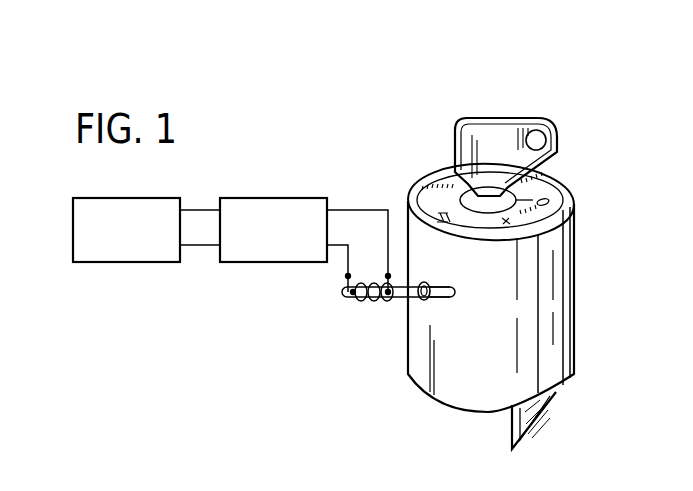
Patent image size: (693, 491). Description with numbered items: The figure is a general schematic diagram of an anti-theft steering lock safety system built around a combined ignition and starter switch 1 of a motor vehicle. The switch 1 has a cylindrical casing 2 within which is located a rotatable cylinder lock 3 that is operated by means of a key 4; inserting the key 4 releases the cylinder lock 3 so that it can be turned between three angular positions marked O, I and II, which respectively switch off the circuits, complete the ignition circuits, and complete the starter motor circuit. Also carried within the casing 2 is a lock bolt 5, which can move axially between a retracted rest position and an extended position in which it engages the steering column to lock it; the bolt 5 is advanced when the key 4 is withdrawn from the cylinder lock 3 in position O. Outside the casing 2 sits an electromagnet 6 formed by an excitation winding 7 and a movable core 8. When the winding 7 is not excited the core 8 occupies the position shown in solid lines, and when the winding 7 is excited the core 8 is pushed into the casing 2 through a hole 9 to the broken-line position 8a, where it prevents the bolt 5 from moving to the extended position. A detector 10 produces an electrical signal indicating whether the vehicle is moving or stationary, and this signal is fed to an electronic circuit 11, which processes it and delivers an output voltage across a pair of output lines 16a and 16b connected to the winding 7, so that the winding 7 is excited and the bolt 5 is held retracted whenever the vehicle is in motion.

The combined ignition and starter switch 1 is at (533, 283).
The casing 2 is at (420, 377).
The rotatable cylinder lock 3 is at (460, 193).
The key 4 is at (556, 142).
The lock bolt 5 is at (557, 396).
The electromagnet 6 is at (393, 293).
The excitation winding 7 is at (363, 282).
The movable core 8 is at (400, 297).
The displaced position of movable core 8a is at (440, 284).
The hole 9 is at (433, 296).
The detector 10 is at (122, 240).
The electronic circuit 11 is at (270, 242).
The output line 16a is at (350, 208).
The output line 16b is at (340, 247).